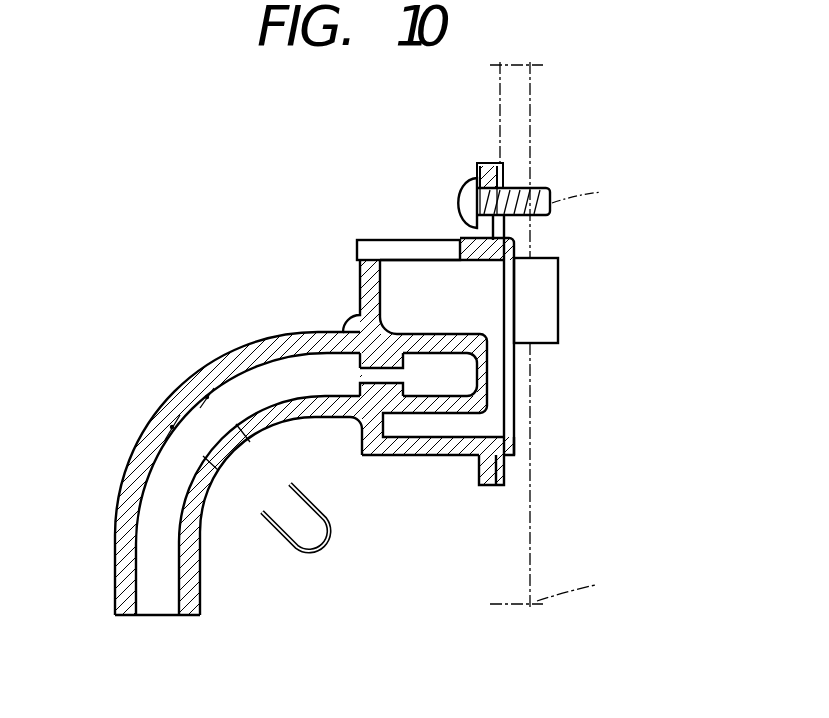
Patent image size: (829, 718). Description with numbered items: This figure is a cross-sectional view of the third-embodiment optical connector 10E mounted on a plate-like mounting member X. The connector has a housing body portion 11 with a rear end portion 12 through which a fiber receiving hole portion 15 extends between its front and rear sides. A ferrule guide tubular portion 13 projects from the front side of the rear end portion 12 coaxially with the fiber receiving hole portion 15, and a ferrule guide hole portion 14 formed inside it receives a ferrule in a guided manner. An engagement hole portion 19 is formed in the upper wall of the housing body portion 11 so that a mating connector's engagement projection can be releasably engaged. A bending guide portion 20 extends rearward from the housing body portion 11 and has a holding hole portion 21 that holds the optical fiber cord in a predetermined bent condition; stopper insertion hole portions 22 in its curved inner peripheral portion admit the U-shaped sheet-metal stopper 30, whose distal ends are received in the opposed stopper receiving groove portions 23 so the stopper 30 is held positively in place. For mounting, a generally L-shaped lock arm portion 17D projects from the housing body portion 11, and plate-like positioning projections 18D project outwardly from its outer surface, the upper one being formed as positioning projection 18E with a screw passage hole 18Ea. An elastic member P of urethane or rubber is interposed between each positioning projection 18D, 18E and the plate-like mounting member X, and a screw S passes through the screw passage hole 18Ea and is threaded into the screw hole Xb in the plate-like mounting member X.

The optical connector 10E is at (186, 284).
The housing body portion 11 is at (447, 455).
The rear end portion 12 is at (358, 262).
The ferrule guide tubular portion 13 is at (417, 333).
The ferrule guide hole portion 14 is at (457, 353).
The fiber receiving hole portion 15 is at (362, 378).
The lock arm portion 17D is at (558, 283).
The positioning projection 18D is at (504, 483).
The positioning projection with screw passage hole 18E is at (487, 162).
The screw passage hole 18Ea is at (505, 190).
The engagement hole portion 19 is at (460, 240).
The bending guide portion 20 is at (114, 545).
The holding hole portion 21 is at (140, 578).
The stopper insertion hole portion 22 is at (251, 446).
The stopper receiving groove portion 23 is at (207, 397).
The stopper 30 is at (327, 550).
The elastic member P is at (504, 218).
The screw S is at (457, 197).
The plate-like mounting member X is at (552, 336).
The screw hole Xb is at (593, 191).